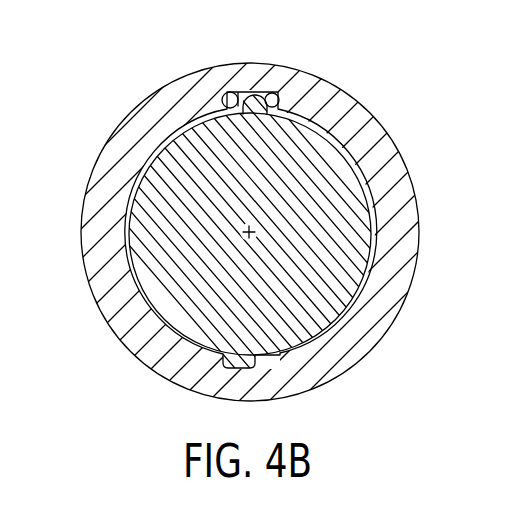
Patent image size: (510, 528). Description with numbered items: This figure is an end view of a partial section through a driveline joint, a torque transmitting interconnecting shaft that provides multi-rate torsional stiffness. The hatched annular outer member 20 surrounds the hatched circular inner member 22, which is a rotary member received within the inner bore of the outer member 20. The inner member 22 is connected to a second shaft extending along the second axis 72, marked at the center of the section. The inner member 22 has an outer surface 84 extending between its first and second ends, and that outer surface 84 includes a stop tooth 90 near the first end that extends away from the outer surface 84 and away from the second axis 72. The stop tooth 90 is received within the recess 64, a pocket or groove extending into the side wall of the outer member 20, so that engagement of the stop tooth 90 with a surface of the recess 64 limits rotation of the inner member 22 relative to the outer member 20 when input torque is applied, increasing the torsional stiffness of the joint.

The outer member 20 is at (101, 282).
The inner member 22 is at (283, 352).
The recess 64 is at (239, 97).
The second axis 72 is at (250, 239).
The outer surface 84 is at (229, 103).
The stop tooth 90 is at (279, 92).